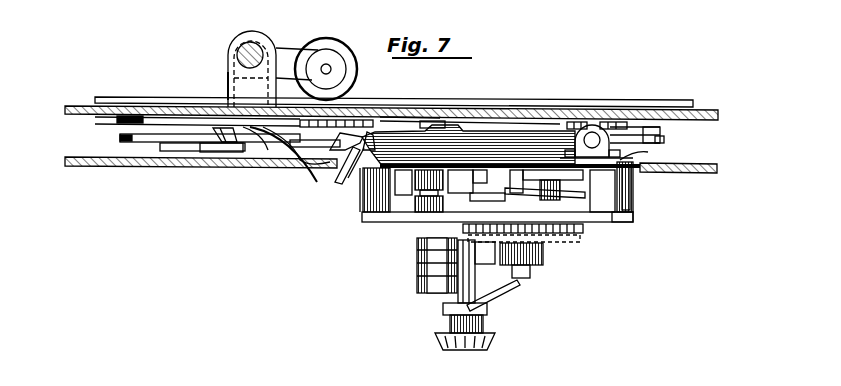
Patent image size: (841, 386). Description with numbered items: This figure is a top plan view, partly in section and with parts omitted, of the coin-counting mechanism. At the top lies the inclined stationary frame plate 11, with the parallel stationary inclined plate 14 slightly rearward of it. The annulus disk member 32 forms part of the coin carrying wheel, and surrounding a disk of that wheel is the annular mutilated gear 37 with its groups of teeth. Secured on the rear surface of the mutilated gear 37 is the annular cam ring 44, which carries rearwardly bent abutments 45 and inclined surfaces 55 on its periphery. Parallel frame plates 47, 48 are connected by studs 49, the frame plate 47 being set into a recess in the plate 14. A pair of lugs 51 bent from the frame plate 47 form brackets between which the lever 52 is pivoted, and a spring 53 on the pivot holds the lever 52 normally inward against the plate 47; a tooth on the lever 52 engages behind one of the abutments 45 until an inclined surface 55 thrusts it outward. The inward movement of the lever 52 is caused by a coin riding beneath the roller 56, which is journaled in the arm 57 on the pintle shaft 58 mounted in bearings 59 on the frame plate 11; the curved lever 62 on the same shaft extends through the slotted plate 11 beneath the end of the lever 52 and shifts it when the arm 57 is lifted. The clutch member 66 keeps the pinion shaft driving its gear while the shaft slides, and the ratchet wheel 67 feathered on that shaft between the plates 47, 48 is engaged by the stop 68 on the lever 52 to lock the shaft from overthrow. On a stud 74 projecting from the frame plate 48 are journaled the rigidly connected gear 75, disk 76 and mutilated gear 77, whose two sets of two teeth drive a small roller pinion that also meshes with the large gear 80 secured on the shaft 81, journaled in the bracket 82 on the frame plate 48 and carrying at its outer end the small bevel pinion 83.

The inclined stationary frame plate 11 is at (719, 116).
The stationary inclined plate 14 is at (712, 176).
The annulus disk member 32 is at (651, 103).
The annular mutilated gear 37 is at (410, 121).
The annular cam ring 44 is at (160, 132).
The rearwardly bent abutments 45 is at (173, 139).
The frame plate 47 is at (618, 162).
The frame plate 48 is at (619, 222).
The studs 49 is at (633, 190).
The lugs 51 is at (592, 132).
The lever 52 is at (508, 130).
The spring 53 is at (660, 132).
The inclined surfaces 55 is at (219, 137).
The roller 56 is at (341, 56).
The arm 57 is at (284, 62).
The pintle shaft 58 is at (249, 48).
The bearings 59 is at (228, 80).
The curved lever 62 is at (277, 147).
The clutch member 66 is at (417, 283).
The ratchet wheel 67 is at (412, 192).
The stop 68 is at (480, 193).
The stud 74 is at (526, 277).
The gear 75 is at (590, 233).
The disk 76 is at (578, 243).
The mutilated gear 77 is at (562, 244).
The large gear 80 is at (475, 292).
The shaft 81 is at (447, 316).
The bracket 82 is at (510, 290).
The small bevel pinion 83 is at (478, 342).